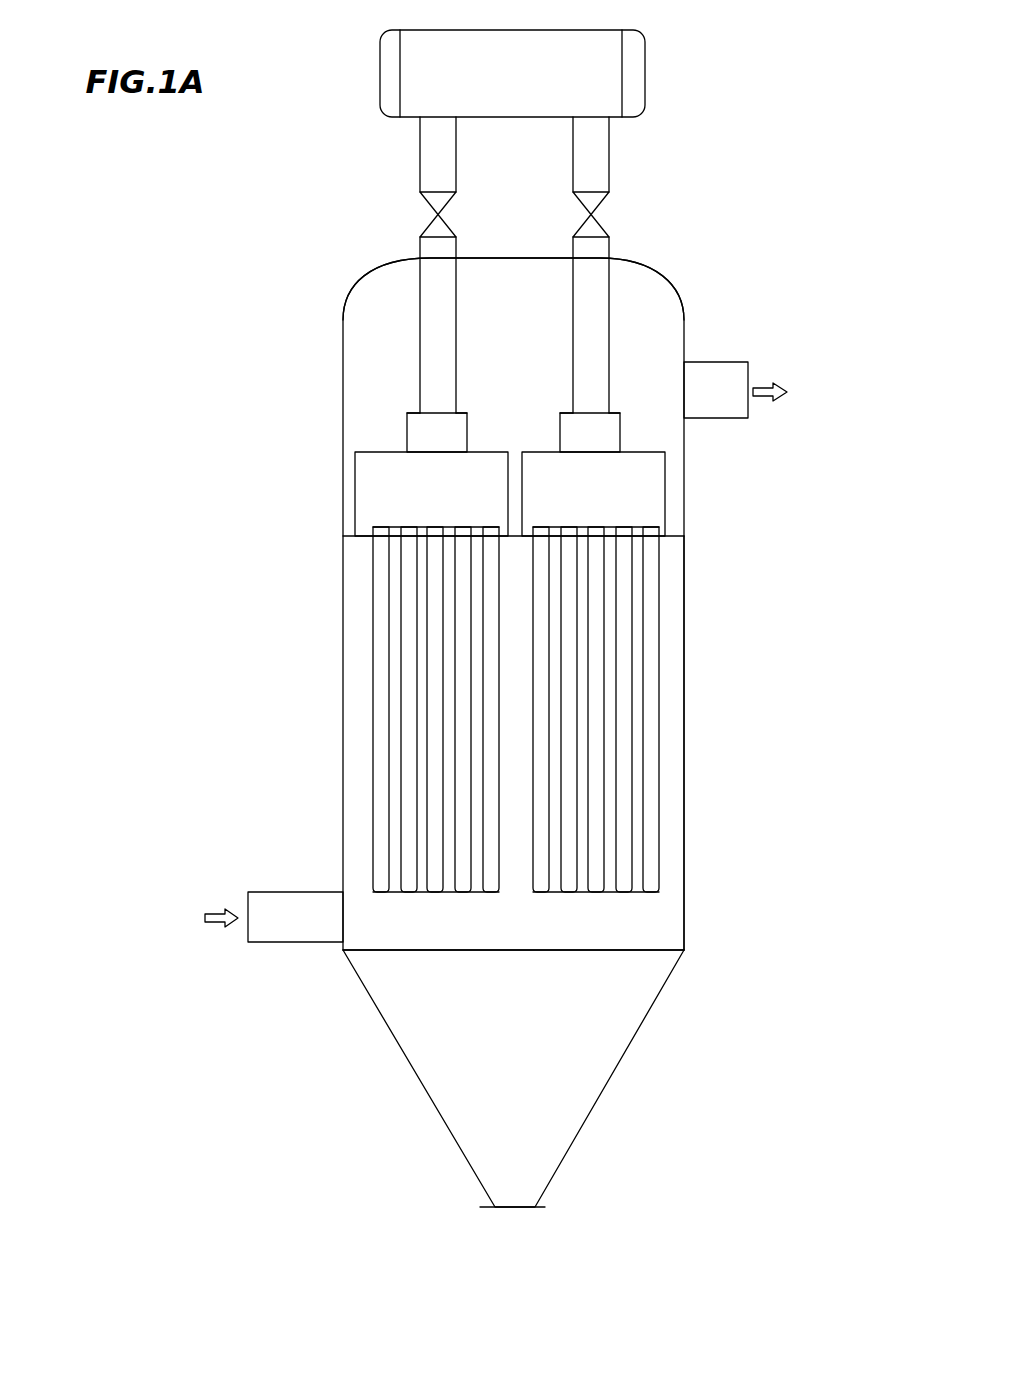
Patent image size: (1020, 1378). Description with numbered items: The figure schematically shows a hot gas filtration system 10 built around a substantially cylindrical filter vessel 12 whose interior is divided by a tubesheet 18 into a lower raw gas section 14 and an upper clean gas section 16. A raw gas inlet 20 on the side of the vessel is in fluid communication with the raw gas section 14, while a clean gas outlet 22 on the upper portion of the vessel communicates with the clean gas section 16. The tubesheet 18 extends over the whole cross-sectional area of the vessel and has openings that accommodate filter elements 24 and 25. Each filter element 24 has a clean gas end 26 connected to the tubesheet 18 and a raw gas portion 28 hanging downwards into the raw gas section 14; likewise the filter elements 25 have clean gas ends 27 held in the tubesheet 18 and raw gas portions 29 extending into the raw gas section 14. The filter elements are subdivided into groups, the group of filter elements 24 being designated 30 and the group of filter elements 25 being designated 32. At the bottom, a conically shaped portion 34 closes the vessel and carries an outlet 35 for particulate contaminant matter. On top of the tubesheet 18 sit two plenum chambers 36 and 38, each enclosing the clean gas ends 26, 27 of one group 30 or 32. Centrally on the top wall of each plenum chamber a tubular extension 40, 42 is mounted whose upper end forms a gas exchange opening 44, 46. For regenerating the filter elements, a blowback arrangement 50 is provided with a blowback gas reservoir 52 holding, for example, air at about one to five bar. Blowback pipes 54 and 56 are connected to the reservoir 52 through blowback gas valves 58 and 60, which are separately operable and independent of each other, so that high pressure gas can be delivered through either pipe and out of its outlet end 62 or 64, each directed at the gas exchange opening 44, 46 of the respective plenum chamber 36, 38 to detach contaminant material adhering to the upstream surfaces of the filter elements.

The hot gas filtration system 10 is at (595, 563).
The filter vessel 12 is at (703, 645).
The raw gas section 14 is at (670, 788).
The clean gas section 16 is at (376, 337).
The tubesheet 18 is at (350, 540).
The raw gas inlet 20 is at (283, 943).
The clean gas outlet 22 is at (728, 374).
The filter element 24 is at (367, 739).
The filter element 25 is at (662, 739).
The clean gas end 26 is at (385, 527).
The clean gas end 27 is at (650, 521).
The raw gas portion 28 is at (373, 827).
The raw gas portion 29 is at (656, 832).
The group of filter elements 30 is at (373, 897).
The group of filter elements 32 is at (533, 897).
The conically shaped portion 34 is at (598, 1105).
The outlet 35 is at (538, 1207).
The plenum chamber 36 is at (383, 483).
The plenum chamber 38 is at (640, 481).
The tubular extension 40 is at (420, 442).
The tubular extension 42 is at (606, 437).
The gas exchange opening 44 is at (410, 410).
The gas exchange opening 46 is at (613, 412).
The blowback arrangement 50 is at (477, 221).
The blowback gas reservoir 52 is at (494, 88).
The blowback pipe 54 is at (420, 258).
The blowback pipe 56 is at (610, 258).
The blowback gas valve 58 is at (408, 211).
The blowback gas valve 60 is at (622, 211).
The outlet end 62 is at (460, 412).
The outlet end 64 is at (567, 412).